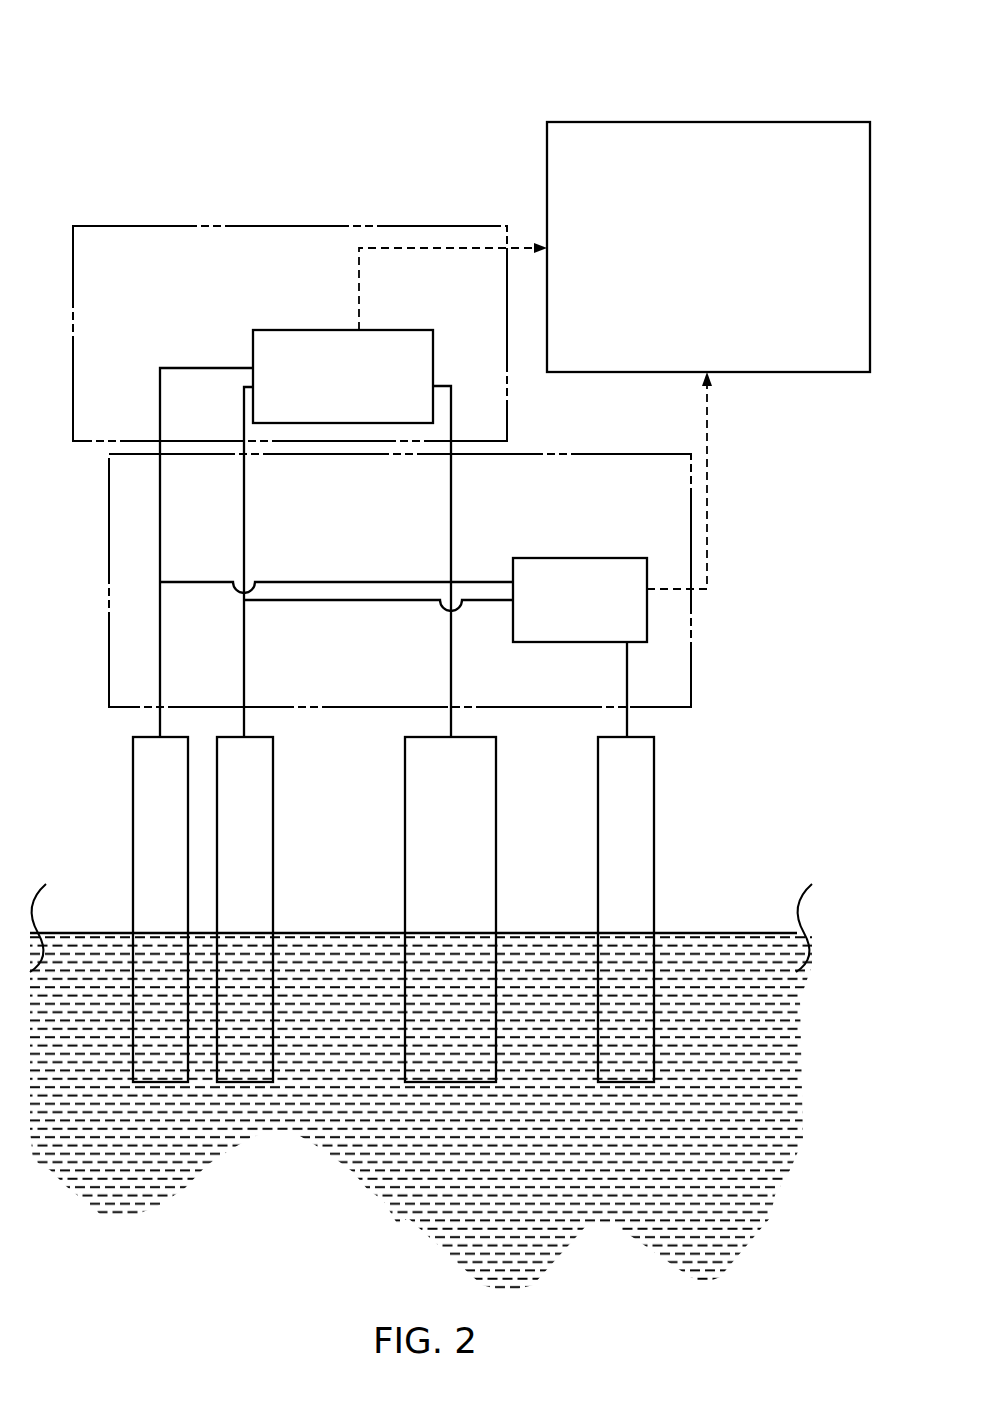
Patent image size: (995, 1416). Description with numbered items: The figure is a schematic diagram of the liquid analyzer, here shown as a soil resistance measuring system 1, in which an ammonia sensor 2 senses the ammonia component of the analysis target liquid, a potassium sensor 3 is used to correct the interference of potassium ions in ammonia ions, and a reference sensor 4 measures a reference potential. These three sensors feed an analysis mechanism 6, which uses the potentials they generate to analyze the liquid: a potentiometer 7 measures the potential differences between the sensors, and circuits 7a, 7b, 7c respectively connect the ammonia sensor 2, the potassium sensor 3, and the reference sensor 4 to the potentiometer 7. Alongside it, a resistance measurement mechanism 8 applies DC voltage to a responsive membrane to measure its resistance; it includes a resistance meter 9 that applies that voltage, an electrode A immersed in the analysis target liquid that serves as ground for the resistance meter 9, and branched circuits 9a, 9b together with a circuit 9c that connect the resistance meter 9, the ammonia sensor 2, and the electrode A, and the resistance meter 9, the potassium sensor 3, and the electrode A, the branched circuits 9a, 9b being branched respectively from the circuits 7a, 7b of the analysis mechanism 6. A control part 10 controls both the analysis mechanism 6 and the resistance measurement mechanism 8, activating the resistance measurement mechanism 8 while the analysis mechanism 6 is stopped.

The soil resistance measuring system 1 is at (101, 87).
The ammonia sensor 2 is at (133, 787).
The potassium sensor 3 is at (273, 787).
The reference sensor 4 is at (496, 784).
The electrode A is at (654, 817).
The analysis mechanism 6 is at (148, 226).
The potentiometer 7 is at (300, 330).
The circuit 7a is at (183, 368).
The circuit 7b is at (244, 432).
The circuit 7c is at (440, 385).
The resistance measurement mechanism 8 is at (691, 672).
The resistance meter 9 is at (622, 558).
The branched circuit 9a is at (190, 583).
The branched circuit 9b is at (348, 601).
The circuit 9c is at (622, 690).
The control part 10 is at (710, 122).